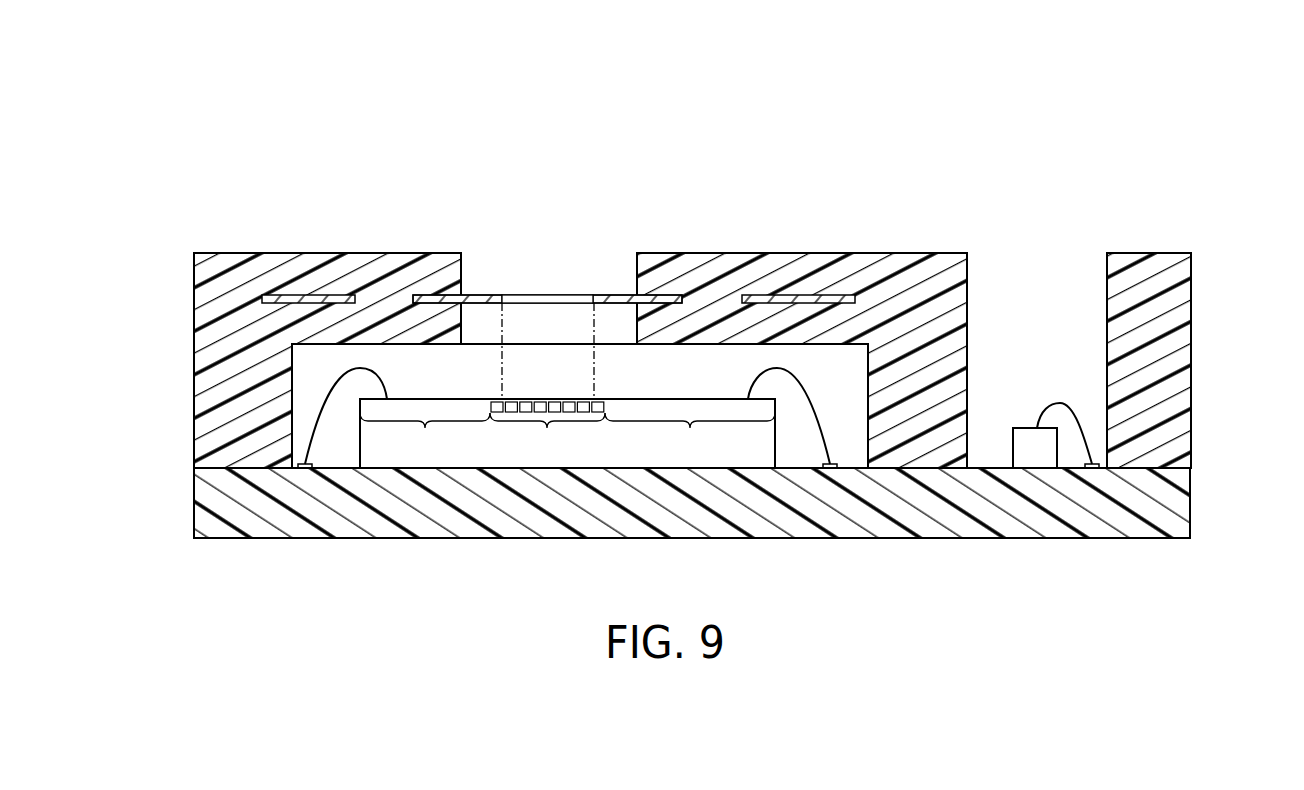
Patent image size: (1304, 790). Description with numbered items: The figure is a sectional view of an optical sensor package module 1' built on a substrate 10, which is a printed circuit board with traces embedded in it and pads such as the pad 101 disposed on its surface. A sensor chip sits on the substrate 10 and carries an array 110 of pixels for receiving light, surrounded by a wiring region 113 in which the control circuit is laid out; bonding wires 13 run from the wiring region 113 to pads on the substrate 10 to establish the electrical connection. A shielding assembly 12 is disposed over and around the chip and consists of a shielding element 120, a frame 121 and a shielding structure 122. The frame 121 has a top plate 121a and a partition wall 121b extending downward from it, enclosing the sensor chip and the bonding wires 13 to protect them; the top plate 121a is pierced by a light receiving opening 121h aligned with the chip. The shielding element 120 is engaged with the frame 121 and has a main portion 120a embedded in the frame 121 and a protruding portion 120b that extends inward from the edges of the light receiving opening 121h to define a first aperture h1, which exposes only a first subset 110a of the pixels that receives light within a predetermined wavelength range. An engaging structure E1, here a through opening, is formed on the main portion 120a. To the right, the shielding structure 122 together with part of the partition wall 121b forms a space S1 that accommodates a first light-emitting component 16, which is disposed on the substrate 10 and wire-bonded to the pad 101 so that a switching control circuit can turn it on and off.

The optical sensor package module 1' is at (733, 320).
The substrate 10 is at (1187, 510).
The pad 101 is at (1092, 470).
The array of pixels 110 is at (547, 385).
The first subset of the pixels 110a is at (545, 396).
The wiring region 113 is at (567, 433).
The shielding assembly 12 is at (648, 277).
The shielding element 120 is at (471, 198).
The main portion 120a is at (668, 297).
The protruding portion 120b is at (566, 248).
The frame 121 is at (494, 298).
The top plate 121a is at (325, 278).
The partition wall 121b is at (233, 361).
The light receiving opening 121h is at (452, 267).
The shielding structure 122 is at (1175, 295).
The bonding wires 13 is at (797, 368).
The first light-emitting component 16 is at (1028, 438).
The engaging structure E1 is at (736, 290).
The space S1 is at (1041, 272).
The first aperture h1 is at (545, 290).